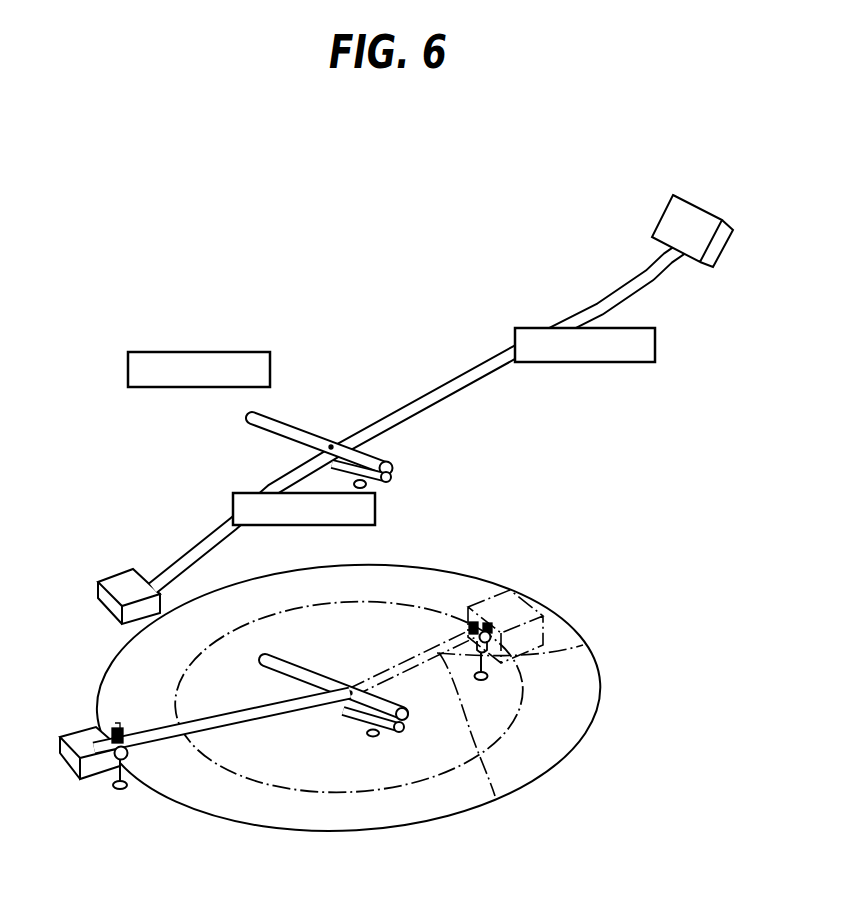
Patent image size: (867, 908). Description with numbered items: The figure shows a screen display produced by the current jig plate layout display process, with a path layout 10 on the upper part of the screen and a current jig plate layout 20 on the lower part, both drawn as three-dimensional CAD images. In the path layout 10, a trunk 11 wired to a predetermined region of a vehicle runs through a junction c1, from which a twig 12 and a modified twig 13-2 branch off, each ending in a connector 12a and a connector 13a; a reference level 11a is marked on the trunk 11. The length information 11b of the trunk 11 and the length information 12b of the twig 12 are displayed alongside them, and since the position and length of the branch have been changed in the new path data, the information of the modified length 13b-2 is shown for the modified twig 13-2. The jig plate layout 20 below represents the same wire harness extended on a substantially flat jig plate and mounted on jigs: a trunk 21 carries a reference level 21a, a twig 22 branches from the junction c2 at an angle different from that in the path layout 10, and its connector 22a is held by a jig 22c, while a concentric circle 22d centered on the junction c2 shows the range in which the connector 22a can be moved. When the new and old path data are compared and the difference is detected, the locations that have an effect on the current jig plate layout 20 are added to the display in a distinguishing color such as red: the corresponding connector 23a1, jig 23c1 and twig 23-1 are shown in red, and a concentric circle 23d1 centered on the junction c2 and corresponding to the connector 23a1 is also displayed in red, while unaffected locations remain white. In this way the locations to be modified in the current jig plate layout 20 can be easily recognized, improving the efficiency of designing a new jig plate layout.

The path layout 10 is at (401, 385).
The trunk 11 is at (281, 421).
The reference level 11a is at (386, 478).
The length information of the trunk 11b is at (128, 368).
The twig 12 is at (207, 543).
The connector 12a is at (124, 582).
The length information of the twig 12b is at (375, 510).
The connector 13a is at (693, 212).
The modified twig 13-2 is at (594, 303).
The information of the modified length 13b-2 is at (655, 345).
The junction c1 is at (331, 445).
The junction c2 is at (350, 691).
The jig plate layout 20 is at (361, 718).
The trunk 21 is at (290, 675).
The reference level 21a is at (400, 729).
The twig 22 is at (228, 727).
The connector 22a is at (83, 737).
The jig 22c is at (123, 790).
The concentric circle 22d is at (600, 692).
The connector 23a1 is at (515, 607).
The jig 23c1 is at (583, 645).
The concentric circle 23d1 is at (365, 794).
The twig 23-1 is at (495, 796).